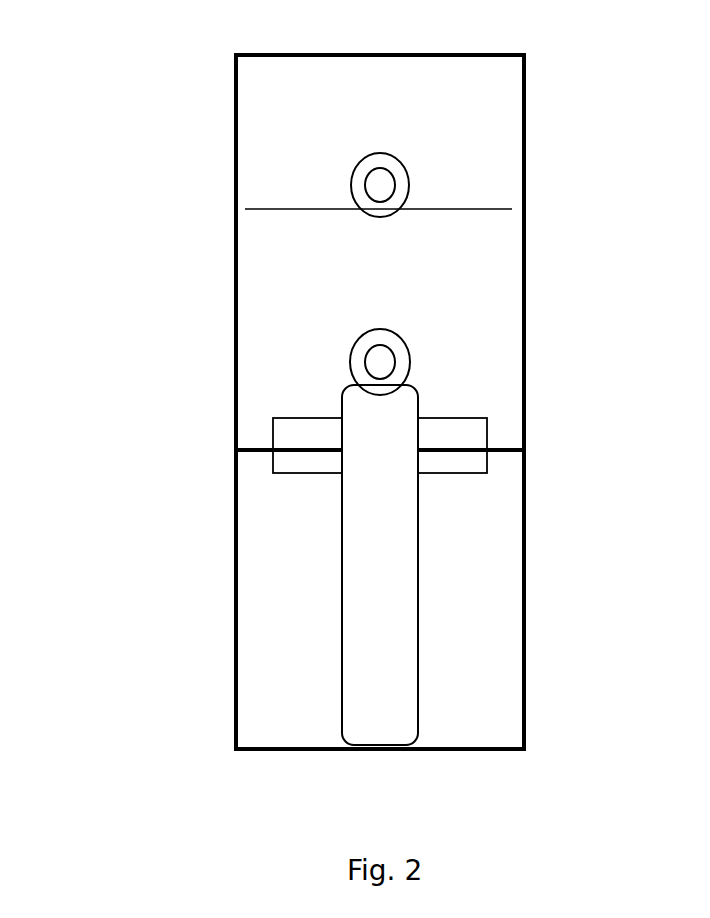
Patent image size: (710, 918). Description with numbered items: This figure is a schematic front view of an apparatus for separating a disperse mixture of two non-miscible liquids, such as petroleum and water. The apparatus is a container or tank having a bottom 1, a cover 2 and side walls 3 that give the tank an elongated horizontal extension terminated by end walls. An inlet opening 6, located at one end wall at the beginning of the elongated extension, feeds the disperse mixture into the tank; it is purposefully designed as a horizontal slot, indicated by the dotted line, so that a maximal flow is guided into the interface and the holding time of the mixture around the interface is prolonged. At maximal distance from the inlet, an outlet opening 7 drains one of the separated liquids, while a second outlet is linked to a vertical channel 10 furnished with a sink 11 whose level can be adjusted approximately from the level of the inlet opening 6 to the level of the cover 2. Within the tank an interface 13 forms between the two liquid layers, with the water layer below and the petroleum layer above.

The bottom 1 is at (480, 749).
The cover 2 is at (485, 55).
The side walls 3 is at (236, 338).
The inlet opening 6 is at (273, 427).
The outlet opening 7 is at (412, 173).
The vertical channel 10 is at (418, 660).
The sink 11 is at (405, 342).
The interface 13 is at (500, 452).